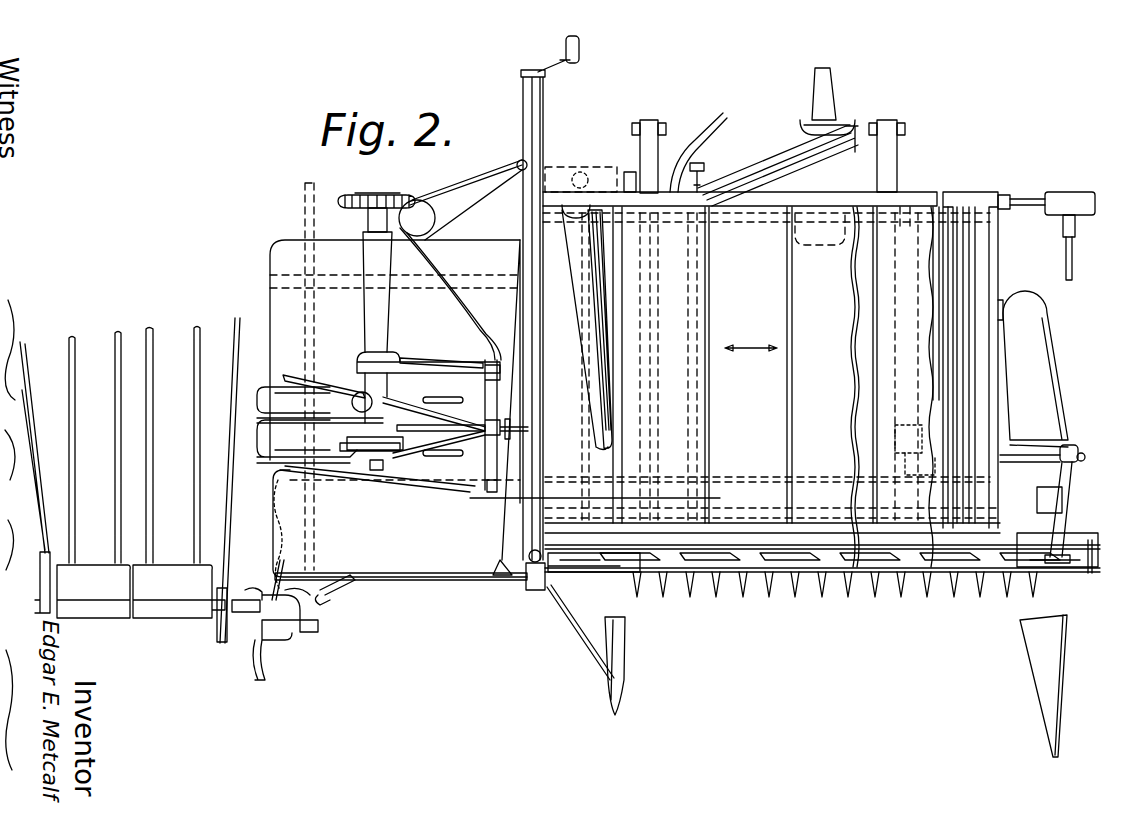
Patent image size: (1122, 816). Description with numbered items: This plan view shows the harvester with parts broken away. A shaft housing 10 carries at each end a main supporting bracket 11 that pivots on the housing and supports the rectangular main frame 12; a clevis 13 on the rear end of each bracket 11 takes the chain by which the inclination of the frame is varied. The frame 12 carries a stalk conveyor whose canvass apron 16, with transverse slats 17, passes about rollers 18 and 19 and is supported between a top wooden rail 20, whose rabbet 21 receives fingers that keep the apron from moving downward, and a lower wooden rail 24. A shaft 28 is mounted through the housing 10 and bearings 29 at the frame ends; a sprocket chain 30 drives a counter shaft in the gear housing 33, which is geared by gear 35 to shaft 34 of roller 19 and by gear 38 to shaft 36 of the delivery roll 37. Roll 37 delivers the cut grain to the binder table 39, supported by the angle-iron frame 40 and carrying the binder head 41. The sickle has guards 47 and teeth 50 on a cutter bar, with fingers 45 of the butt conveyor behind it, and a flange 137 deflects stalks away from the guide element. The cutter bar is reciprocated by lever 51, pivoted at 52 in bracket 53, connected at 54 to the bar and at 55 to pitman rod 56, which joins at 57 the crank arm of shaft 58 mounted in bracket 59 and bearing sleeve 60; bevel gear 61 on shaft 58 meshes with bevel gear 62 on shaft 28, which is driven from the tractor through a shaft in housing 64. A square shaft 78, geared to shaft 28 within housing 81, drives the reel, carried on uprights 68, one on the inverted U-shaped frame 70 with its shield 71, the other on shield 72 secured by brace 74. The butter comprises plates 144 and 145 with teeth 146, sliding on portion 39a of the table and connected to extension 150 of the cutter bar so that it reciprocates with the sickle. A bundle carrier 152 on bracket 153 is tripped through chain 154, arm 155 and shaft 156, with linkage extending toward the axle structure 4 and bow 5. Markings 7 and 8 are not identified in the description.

The frame 70 is at (522, 128).
The shaft housing 64 is at (822, 85).
The gear 35 is at (583, 172).
The gear housing 33 is at (612, 185).
The shaft 34 is at (600, 180).
The sprocket chain 30 is at (633, 185).
The clevis 13 is at (660, 125).
The main supporting bracket 11 is at (656, 158).
The shaft housing 10 is at (800, 165).
The bow 5 is at (810, 145).
The canvass apron 16 is at (722, 232).
The bevel gear 62 is at (915, 192).
The bevel gear 61 is at (944, 194).
The main frame 12 is at (968, 194).
The bearings 29 is at (1003, 189).
The shaft 28 is at (1028, 198).
The housing 81 is at (1085, 216).
The square shaft 78 is at (1069, 281).
The gear 38 is at (535, 180).
The shaft 36 is at (541, 198).
The binder table 39 is at (484, 255).
The binder head 41 is at (365, 255).
The frame 40 is at (396, 329).
The wooden rail 20 is at (783, 206).
The rabbet 21 is at (785, 210).
The slats 17 is at (870, 290).
The bearing sleeve 60 is at (990, 256).
The shaft 58 is at (988, 275).
The brace 74 is at (1003, 306).
The bracket 59 is at (918, 426).
The shield 72 is at (1058, 402).
The pitman rod 56 is at (1025, 457).
The connection 55 is at (1072, 447).
The pivot 52 is at (1084, 459).
The lever 51 is at (1068, 500).
The bracket 53 is at (1058, 470).
The section line 8 is at (1014, 466).
The connection 57 is at (920, 472).
The delivery roll 37 is at (570, 480).
The flange 137 is at (590, 540).
The section line 7 is at (741, 480).
The wooden rail 24 is at (745, 525).
The arm 155 is at (276, 484).
The shaft 156 is at (340, 483).
The trip chain 154 is at (274, 548).
The bracket 153 is at (335, 592).
The upwardly and forwardly extending portion 39a is at (401, 595).
The uprights 68 is at (525, 582).
The teeth 146 is at (470, 605).
The plate 145 is at (490, 577).
The plate 144 is at (560, 600).
The extension 150 is at (575, 580).
The roller 19 is at (605, 576).
The axle structure 4 is at (472, 540).
The fingers 45 is at (830, 558).
The cutting members or teeth 50 is at (770, 592).
The guards 47 is at (805, 597).
The roller 18 is at (937, 545).
The connection 54 is at (1058, 576).
The bundle carrier 152 is at (133, 619).
The shield 71 is at (505, 514).